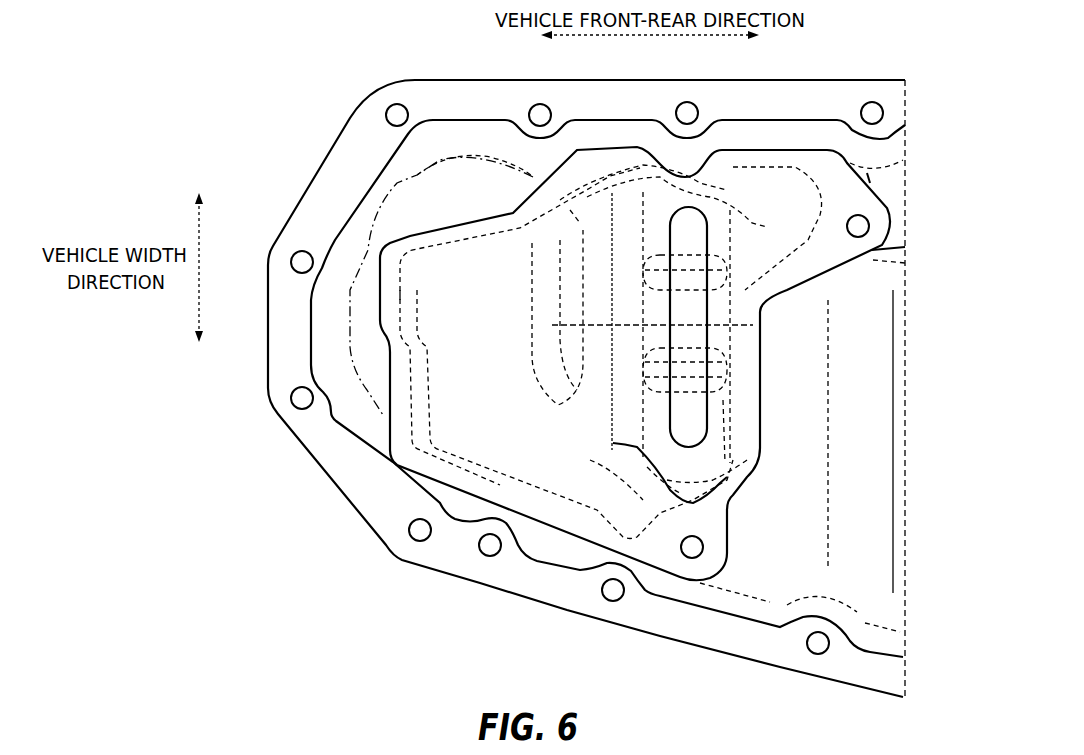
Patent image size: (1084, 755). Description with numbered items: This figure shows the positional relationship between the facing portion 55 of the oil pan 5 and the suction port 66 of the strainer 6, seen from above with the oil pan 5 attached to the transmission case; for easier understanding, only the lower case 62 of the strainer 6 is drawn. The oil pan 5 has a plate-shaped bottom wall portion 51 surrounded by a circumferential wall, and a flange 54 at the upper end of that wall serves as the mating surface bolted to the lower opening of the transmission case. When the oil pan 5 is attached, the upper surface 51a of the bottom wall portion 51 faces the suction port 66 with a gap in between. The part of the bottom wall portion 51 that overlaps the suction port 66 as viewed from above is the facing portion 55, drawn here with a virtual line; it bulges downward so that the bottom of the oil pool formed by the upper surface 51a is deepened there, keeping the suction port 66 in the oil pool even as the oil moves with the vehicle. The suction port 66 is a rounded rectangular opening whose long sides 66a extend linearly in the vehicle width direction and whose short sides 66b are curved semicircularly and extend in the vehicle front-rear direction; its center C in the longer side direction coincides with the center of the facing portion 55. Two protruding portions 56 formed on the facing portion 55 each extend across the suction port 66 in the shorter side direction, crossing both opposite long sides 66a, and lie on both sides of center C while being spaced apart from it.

The oil pan 5 is at (330, 150).
The strainer 6 is at (400, 468).
The bottom wall portion 51 is at (872, 552).
The upper surface 51a is at (797, 561).
The flange 54 is at (305, 427).
The facing portion 55 is at (645, 445).
The protruding portion 56 is at (657, 257).
The lower case 62 is at (846, 268).
The suction port 66 is at (716, 342).
The long side 66a is at (707, 410).
The short side 66b is at (725, 195).